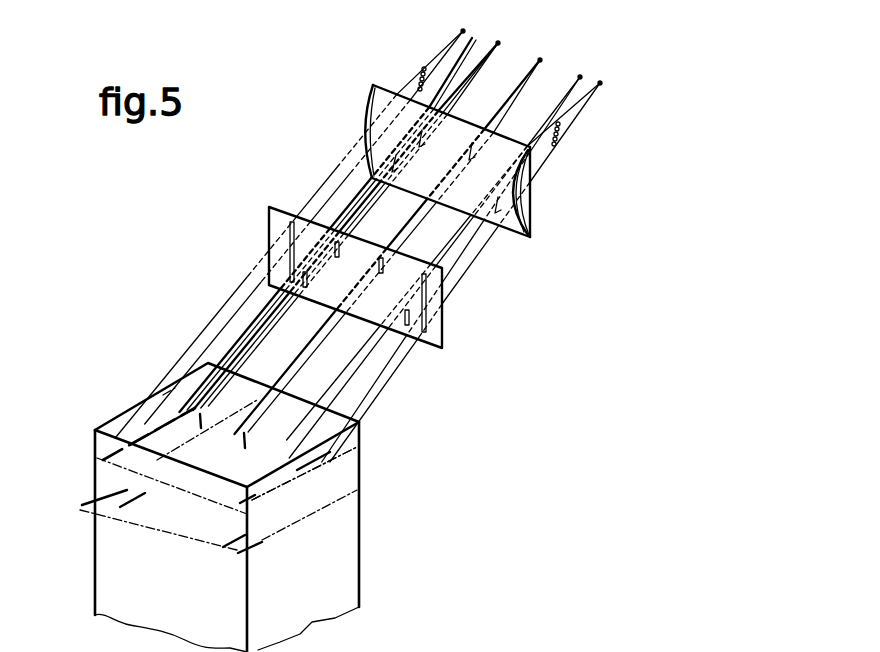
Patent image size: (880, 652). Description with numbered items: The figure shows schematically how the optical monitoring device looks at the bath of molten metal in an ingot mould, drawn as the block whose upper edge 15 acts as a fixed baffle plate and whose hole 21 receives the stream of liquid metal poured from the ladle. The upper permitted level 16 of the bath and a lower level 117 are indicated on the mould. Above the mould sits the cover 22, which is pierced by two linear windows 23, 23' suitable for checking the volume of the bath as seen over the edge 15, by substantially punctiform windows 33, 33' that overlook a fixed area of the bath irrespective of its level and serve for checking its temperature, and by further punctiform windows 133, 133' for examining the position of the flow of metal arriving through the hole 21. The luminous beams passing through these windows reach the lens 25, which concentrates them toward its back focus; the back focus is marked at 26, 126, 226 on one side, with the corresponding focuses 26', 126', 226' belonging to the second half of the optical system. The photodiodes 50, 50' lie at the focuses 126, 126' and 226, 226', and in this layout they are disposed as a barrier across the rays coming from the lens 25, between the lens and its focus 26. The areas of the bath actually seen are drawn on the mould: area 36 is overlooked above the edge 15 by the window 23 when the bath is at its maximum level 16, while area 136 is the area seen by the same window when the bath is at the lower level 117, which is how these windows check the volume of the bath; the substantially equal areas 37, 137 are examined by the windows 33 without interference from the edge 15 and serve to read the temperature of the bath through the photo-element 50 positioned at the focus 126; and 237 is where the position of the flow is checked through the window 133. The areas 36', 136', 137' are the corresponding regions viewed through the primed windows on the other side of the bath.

The edge of the ingot mould 15 is at (360, 422).
The upper level of the liquid metal 16 is at (366, 444).
The lower level of the bath 117 is at (366, 490).
The hole of the ingot mould 21 is at (191, 357).
The cover 22 is at (269, 207).
The window 23 is at (261, 252).
The window 23' is at (467, 303).
The lens 25 is at (373, 88).
The back focus of the lens 26 is at (290, 224).
The back focus of the lens 126 is at (350, 211).
The back focus of the lens 226 is at (380, 210).
The light source 26' is at (476, 271).
The focus 126' is at (457, 256).
The focus 226' is at (424, 230).
The window 33 is at (275, 293).
The window 33' is at (431, 345).
The window 133 is at (294, 203).
The window 133' is at (421, 251).
The area of the bath 36 is at (125, 414).
The area of the bath 37 is at (176, 415).
The flow position checking area 237 is at (206, 428).
The slot opening 36' is at (356, 488).
The area of the bath 136 is at (83, 502).
The area of the bath 137 is at (92, 524).
The side slot opening 136' is at (278, 569).
The side slot opening 137' is at (212, 565).
The photodiode 50 is at (404, 61).
The photodiode 50' is at (583, 144).